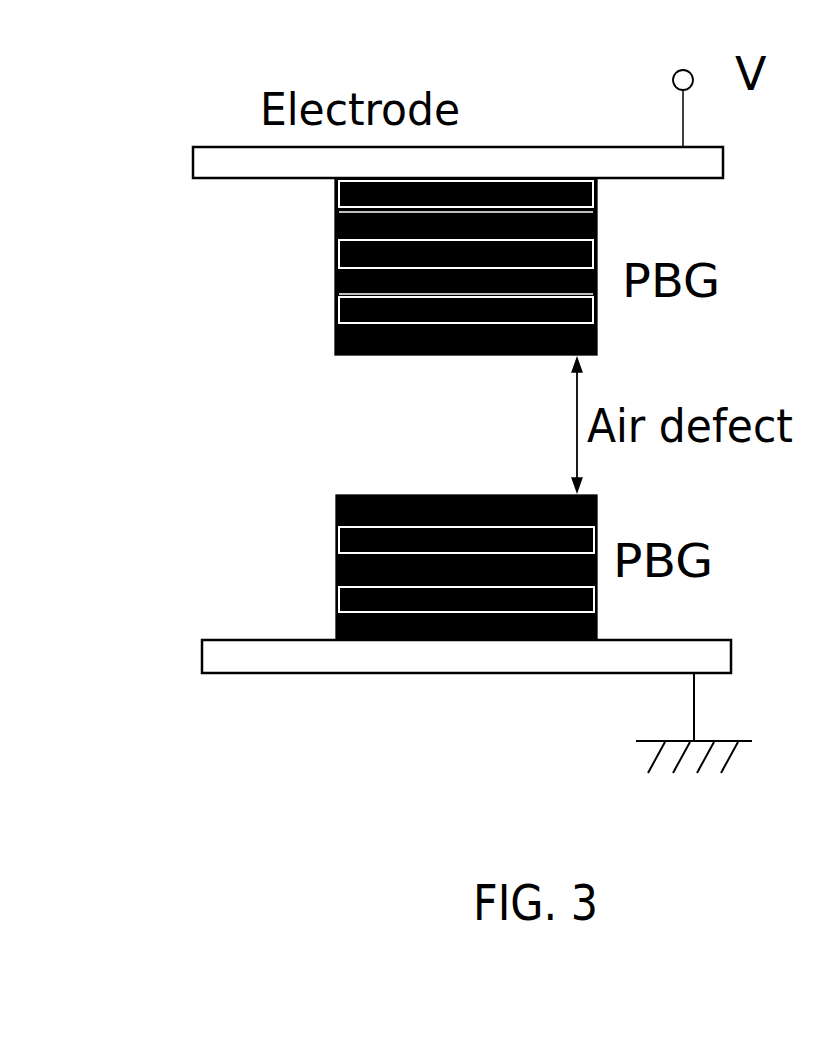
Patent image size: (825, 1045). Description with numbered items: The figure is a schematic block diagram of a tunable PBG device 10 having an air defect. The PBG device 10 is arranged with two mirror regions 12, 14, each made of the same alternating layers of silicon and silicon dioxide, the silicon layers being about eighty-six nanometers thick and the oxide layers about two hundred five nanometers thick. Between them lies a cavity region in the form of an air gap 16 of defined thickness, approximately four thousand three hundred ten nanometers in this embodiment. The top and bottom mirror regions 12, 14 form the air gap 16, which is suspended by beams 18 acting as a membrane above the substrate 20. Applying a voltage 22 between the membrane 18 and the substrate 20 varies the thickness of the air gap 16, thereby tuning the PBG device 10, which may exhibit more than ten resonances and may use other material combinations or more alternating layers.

The tunable PBG device 10 is at (263, 740).
The top mirror region 12 is at (330, 263).
The bottom mirror region 14 is at (337, 572).
The air gap 16 is at (372, 436).
The beams 18 is at (182, 164).
The substrate 20 is at (208, 657).
The voltage 22 is at (661, 66).